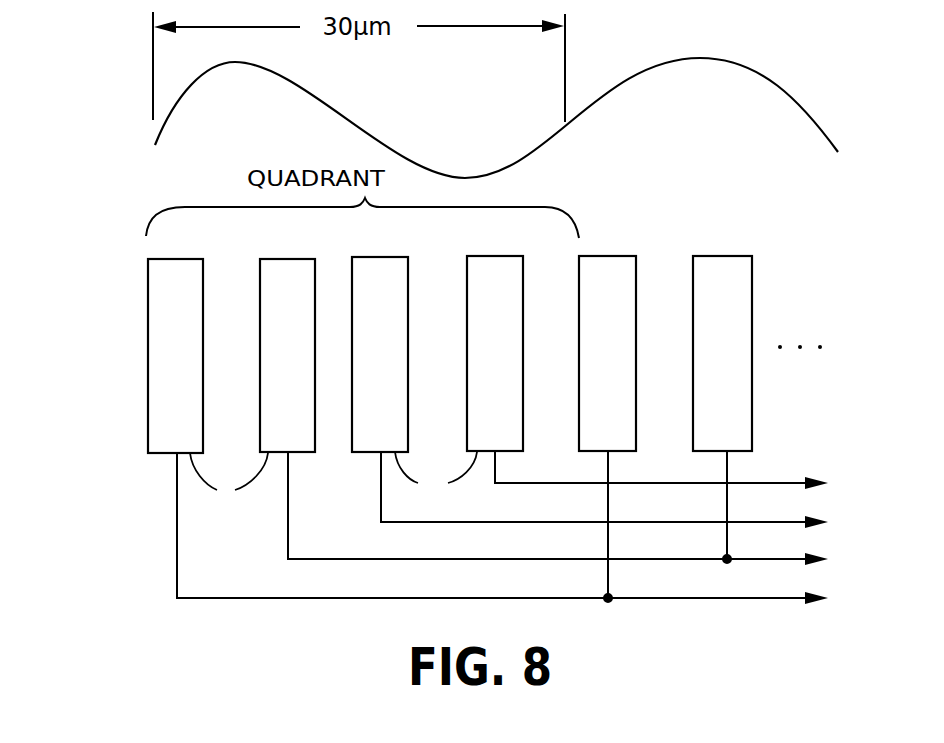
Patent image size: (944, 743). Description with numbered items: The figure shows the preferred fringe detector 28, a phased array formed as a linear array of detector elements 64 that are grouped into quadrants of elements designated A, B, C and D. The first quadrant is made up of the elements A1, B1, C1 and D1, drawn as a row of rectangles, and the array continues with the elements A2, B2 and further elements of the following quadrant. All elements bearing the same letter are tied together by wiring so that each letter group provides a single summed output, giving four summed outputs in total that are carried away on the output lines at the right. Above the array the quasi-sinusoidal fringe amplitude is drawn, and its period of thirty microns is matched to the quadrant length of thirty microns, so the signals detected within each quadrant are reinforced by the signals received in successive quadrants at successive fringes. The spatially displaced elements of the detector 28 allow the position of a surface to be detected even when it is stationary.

The fringe detector 28 is at (122, 447).
The detector elements 64 is at (333, 485).
The detector element A1 is at (175, 356).
The detector element B1 is at (287, 355).
The detector element C1 is at (380, 354).
The detector element D1 is at (495, 353).
The detector element A2 is at (607, 353).
The detector element B2 is at (722, 353).